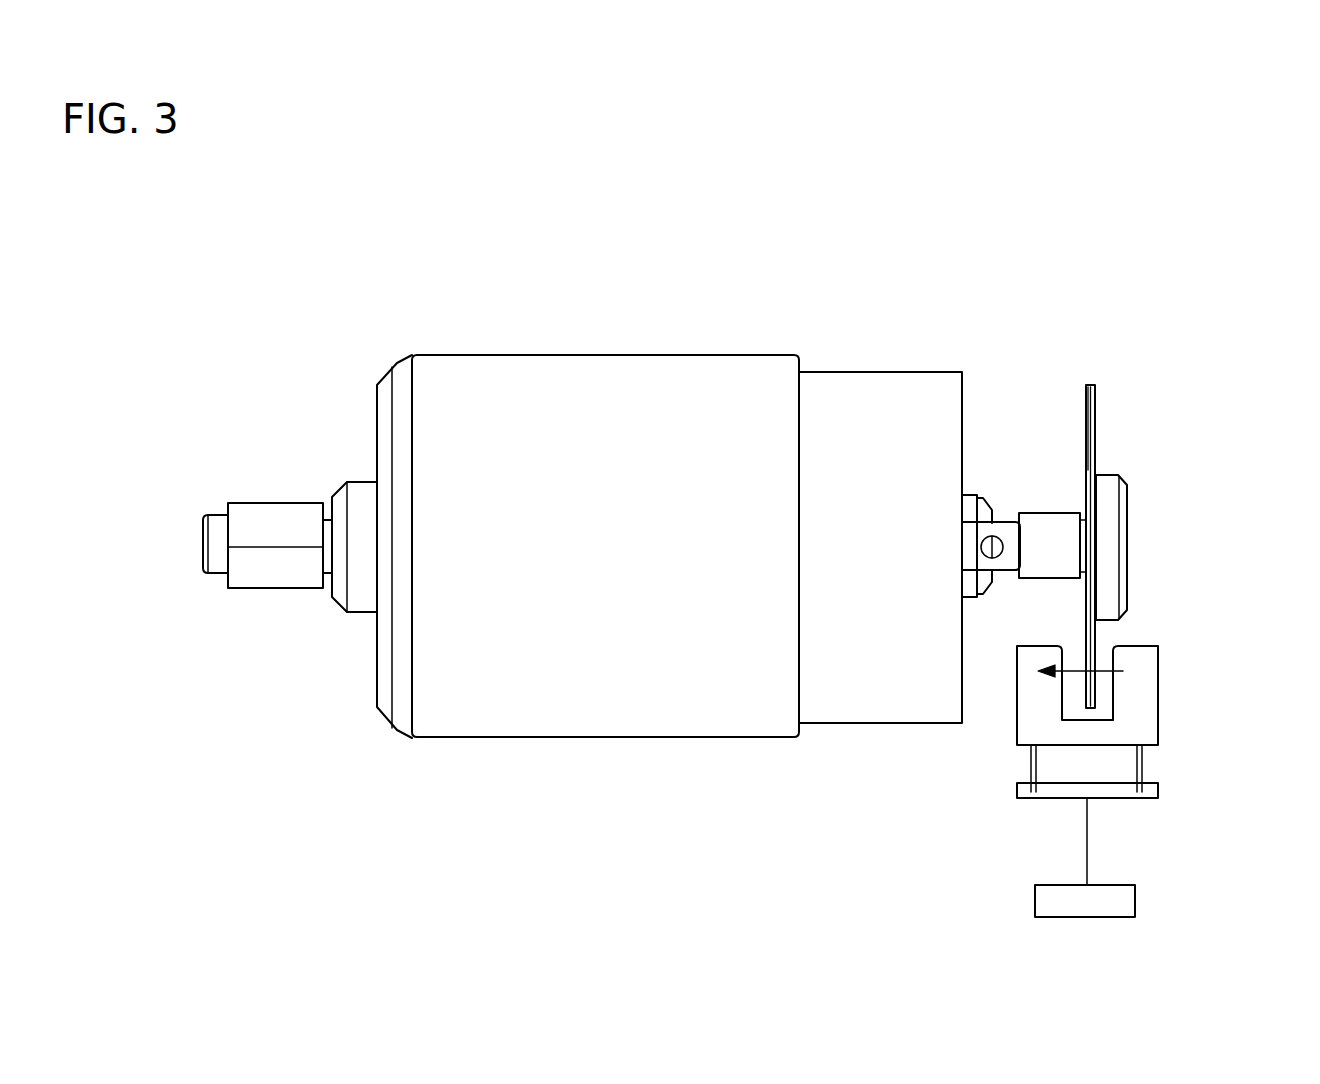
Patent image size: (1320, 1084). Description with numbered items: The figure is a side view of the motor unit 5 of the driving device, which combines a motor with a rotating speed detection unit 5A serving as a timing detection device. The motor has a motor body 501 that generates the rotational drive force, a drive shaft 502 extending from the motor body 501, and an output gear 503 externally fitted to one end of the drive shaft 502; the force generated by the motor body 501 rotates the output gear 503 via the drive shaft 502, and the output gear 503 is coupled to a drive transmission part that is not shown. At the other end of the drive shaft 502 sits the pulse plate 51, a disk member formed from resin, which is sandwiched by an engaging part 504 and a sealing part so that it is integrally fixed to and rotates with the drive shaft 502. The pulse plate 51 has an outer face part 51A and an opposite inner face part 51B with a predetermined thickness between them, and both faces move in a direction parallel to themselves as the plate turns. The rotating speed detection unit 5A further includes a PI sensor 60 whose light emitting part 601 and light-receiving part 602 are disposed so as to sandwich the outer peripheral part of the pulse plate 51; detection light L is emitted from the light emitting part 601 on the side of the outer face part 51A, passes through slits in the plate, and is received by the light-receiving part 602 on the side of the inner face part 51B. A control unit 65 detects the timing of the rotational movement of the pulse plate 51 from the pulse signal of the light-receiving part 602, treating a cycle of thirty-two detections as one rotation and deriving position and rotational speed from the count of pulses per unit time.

The motor unit 5 is at (624, 500).
The rotating speed detection unit 5A is at (1152, 513).
The pulse plate 51 is at (1094, 397).
The outer face part 51A is at (1097, 438).
The inner face part 51B is at (1086, 417).
The motor body 501 is at (602, 722).
The drive shaft 502 is at (217, 567).
The output gear 503 is at (277, 580).
The engaging part 504 is at (1052, 528).
The PI sensor 60 is at (1168, 744).
The light emitting part 601 is at (1140, 673).
The light-receiving part 602 is at (1045, 698).
The control unit 65 is at (1128, 901).
The light beam L is at (1102, 665).